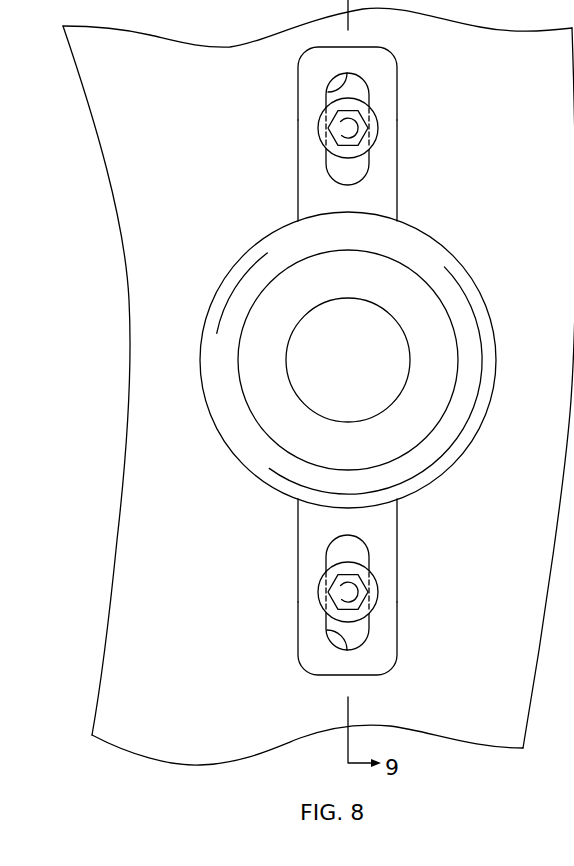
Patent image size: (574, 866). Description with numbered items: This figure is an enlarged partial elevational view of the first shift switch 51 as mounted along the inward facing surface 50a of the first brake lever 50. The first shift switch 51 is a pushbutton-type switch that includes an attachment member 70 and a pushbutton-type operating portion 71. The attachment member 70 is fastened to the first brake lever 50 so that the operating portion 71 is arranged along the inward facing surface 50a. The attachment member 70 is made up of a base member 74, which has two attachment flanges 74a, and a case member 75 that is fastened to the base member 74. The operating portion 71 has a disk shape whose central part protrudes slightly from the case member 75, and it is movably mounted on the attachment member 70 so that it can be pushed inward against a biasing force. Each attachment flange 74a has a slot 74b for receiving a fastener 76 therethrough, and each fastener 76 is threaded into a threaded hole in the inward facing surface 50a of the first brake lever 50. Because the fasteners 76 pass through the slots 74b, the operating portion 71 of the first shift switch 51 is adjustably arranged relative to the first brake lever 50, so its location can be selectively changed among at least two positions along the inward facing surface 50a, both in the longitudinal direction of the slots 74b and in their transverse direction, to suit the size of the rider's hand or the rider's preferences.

The first brake lever 50 is at (124, 289).
The inward facing surface 50a is at (175, 517).
The first shift switch 51 is at (220, 238).
The attachment member 70 is at (356, 362).
The pushbutton-type operating portion 71 is at (322, 379).
The base member 74 is at (365, 362).
The attachment flange 74a is at (398, 102).
The slot 74b is at (328, 93).
The case member 75 is at (419, 253).
The fastener 76 is at (323, 130).